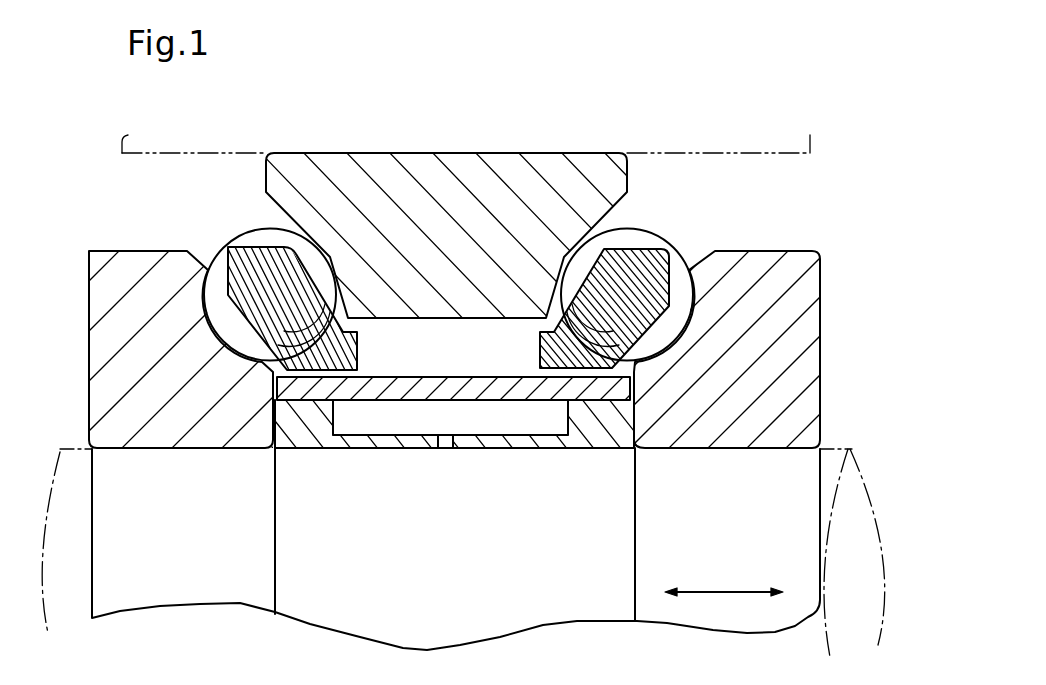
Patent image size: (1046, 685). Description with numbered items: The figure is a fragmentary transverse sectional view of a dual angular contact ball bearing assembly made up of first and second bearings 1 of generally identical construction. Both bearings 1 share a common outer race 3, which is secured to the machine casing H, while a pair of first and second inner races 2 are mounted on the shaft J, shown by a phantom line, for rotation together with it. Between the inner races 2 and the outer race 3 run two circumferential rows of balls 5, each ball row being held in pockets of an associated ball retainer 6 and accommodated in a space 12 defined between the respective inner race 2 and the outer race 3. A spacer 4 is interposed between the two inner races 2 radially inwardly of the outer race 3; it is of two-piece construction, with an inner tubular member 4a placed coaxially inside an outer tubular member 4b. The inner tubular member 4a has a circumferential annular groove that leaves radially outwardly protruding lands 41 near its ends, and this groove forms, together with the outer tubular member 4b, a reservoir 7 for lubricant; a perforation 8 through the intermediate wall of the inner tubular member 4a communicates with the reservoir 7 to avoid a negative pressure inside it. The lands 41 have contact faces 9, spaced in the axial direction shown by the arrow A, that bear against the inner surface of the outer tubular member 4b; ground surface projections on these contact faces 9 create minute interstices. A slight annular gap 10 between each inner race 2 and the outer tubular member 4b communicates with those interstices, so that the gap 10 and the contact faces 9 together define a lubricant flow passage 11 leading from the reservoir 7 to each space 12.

The bearing 1 is at (138, 176).
The inner race 2 is at (110, 392).
The common outer race 3 is at (459, 182).
The spacer 4 is at (480, 482).
The inner tubular member 4a is at (484, 440).
The outer tubular member 4b is at (505, 395).
The ball 5 is at (227, 246).
The ball retainer 6 is at (645, 278).
The reservoir 7 is at (393, 412).
The perforation 8 is at (445, 450).
The contact face 9 is at (272, 447).
The annular gap 10 is at (275, 388).
The lubricant flow passage 11 is at (165, 475).
The space 12 is at (268, 362).
The land 41 is at (317, 433).
The machine casing H is at (813, 137).
The shaft J is at (463, 541).
The axial direction A is at (722, 592).